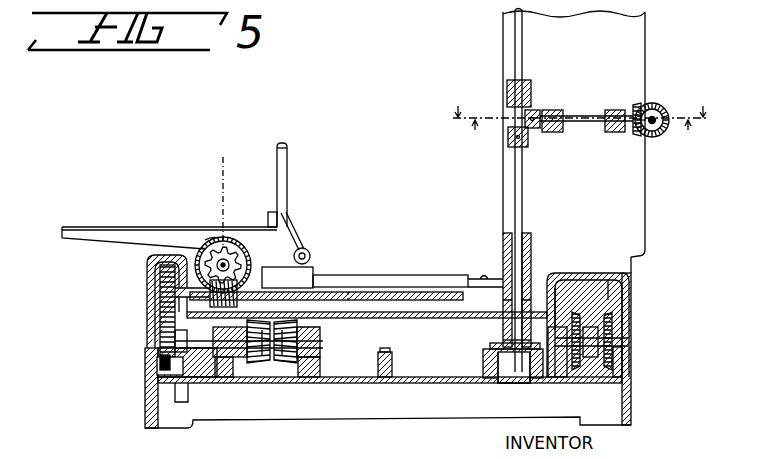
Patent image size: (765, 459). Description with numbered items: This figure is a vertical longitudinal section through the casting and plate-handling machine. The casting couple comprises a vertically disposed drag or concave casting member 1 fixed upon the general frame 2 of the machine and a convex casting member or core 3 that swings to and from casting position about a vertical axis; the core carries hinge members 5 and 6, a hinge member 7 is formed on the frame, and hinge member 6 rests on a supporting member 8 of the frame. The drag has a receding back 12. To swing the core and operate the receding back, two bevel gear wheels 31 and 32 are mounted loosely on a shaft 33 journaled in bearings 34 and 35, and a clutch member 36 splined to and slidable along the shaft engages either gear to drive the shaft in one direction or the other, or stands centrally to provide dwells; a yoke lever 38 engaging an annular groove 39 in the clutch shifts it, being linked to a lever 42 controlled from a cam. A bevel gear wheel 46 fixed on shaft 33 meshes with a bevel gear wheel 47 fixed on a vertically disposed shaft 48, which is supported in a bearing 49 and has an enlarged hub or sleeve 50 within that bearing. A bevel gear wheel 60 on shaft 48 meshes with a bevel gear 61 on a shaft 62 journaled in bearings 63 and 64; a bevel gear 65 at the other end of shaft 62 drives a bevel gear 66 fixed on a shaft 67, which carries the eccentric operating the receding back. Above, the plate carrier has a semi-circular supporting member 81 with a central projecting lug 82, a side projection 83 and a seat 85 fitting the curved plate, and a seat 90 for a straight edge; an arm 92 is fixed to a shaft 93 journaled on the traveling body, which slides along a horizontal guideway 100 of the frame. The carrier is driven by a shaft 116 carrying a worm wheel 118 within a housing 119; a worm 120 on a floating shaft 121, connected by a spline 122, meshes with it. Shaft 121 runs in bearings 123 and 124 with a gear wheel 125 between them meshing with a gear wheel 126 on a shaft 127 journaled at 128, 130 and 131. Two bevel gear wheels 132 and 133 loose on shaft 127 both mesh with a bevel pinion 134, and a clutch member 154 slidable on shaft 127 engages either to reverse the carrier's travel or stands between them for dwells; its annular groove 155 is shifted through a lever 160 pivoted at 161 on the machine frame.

The drag or concave casting member 1 is at (655, 200).
The general frame 2 is at (631, 400).
The convex casting member or core 3 is at (503, 190).
The hinge member 5 is at (507, 90).
The hinge member 6 is at (503, 233).
The hinge member 7 is at (578, 104).
The supporting member 8 is at (492, 279).
The receding back 12 is at (218, 168).
The bevel gear wheel 31 is at (575, 273).
The bevel gear wheel 32 is at (612, 310).
The shaft 33 is at (628, 340).
The bearing 34 is at (567, 280).
The bearing 35 is at (631, 362).
The clutch member 36 is at (583, 320).
The yoke lever 38 is at (608, 280).
The annular groove 39 is at (612, 330).
The lever 42 is at (505, 338).
The beveled gear wheel 46 is at (510, 303).
The bevel gear wheel 47 is at (490, 345).
The vertically disposed shaft 48 is at (514, 168).
The bearing 49 is at (483, 360).
The enlarged hub or sleeve 50 is at (503, 383).
The bevel gear wheel 60 is at (508, 140).
The bevel gear 61 is at (533, 112).
The shaft 62 is at (580, 121).
The bearing 63 is at (549, 110).
The bearing 64 is at (608, 110).
The bevel gear 65 is at (636, 106).
The bevel gear 66 is at (645, 135).
The shaft 67 is at (652, 103).
The semi-circular member 81 is at (287, 170).
The projecting lug 82 is at (287, 147).
The projection 83 is at (297, 235).
The projection or seat 85 is at (278, 215).
The seat 90 is at (125, 226).
The arm 92 is at (313, 230).
The shaft 93 is at (310, 250).
The guideway 100 is at (325, 275).
The shaft 116 is at (220, 237).
The worm wheel 118 is at (215, 240).
The housing 119 is at (242, 250).
The worm 120 is at (245, 285).
The floating shaft 121 is at (395, 292).
The spline 122 is at (348, 292).
The bearing 123 is at (147, 262).
The bearing 124 is at (175, 290).
The gear wheel 125 is at (160, 275).
The gear wheel 126 is at (157, 367).
The shaft 127 is at (185, 385).
The journal 128 is at (175, 343).
The journal 130 is at (175, 335).
The journal 131 is at (318, 335).
The bevel gear wheel 132 is at (250, 360).
The bevel gear wheel 133 is at (300, 377).
The bevel pinion 134 is at (270, 365).
The clutch member 154 is at (285, 317).
The annular groove 155 is at (272, 365).
The lever 160 is at (392, 352).
The pivot 161 is at (385, 348).